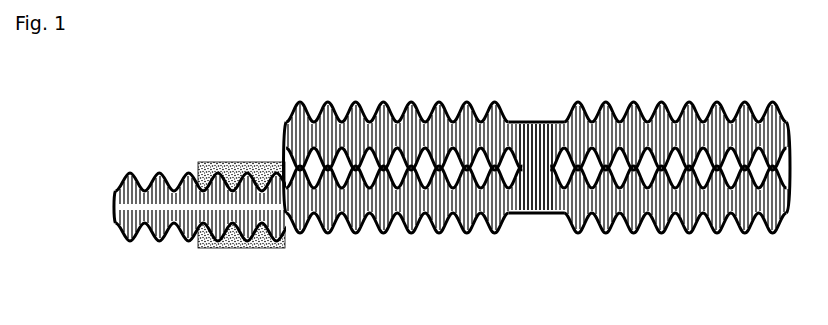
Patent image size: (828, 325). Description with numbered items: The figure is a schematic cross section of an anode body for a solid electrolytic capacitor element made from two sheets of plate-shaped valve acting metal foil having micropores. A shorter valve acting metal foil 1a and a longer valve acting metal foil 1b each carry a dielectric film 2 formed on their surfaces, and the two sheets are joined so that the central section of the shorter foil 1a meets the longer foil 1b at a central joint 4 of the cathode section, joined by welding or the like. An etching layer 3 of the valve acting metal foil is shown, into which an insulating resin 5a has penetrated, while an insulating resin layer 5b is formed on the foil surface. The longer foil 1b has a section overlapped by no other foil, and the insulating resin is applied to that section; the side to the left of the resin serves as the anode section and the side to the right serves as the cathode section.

The shorter valve acting metal foil 1a is at (494, 174).
The longer valve acting metal foil 1b is at (162, 206).
The dielectric film 2 is at (128, 164).
The etching layer 3 is at (314, 239).
The joint 4 is at (536, 113).
The insulating resin in the etching layer 5a is at (260, 243).
The insulating resin layer 5b is at (214, 257).